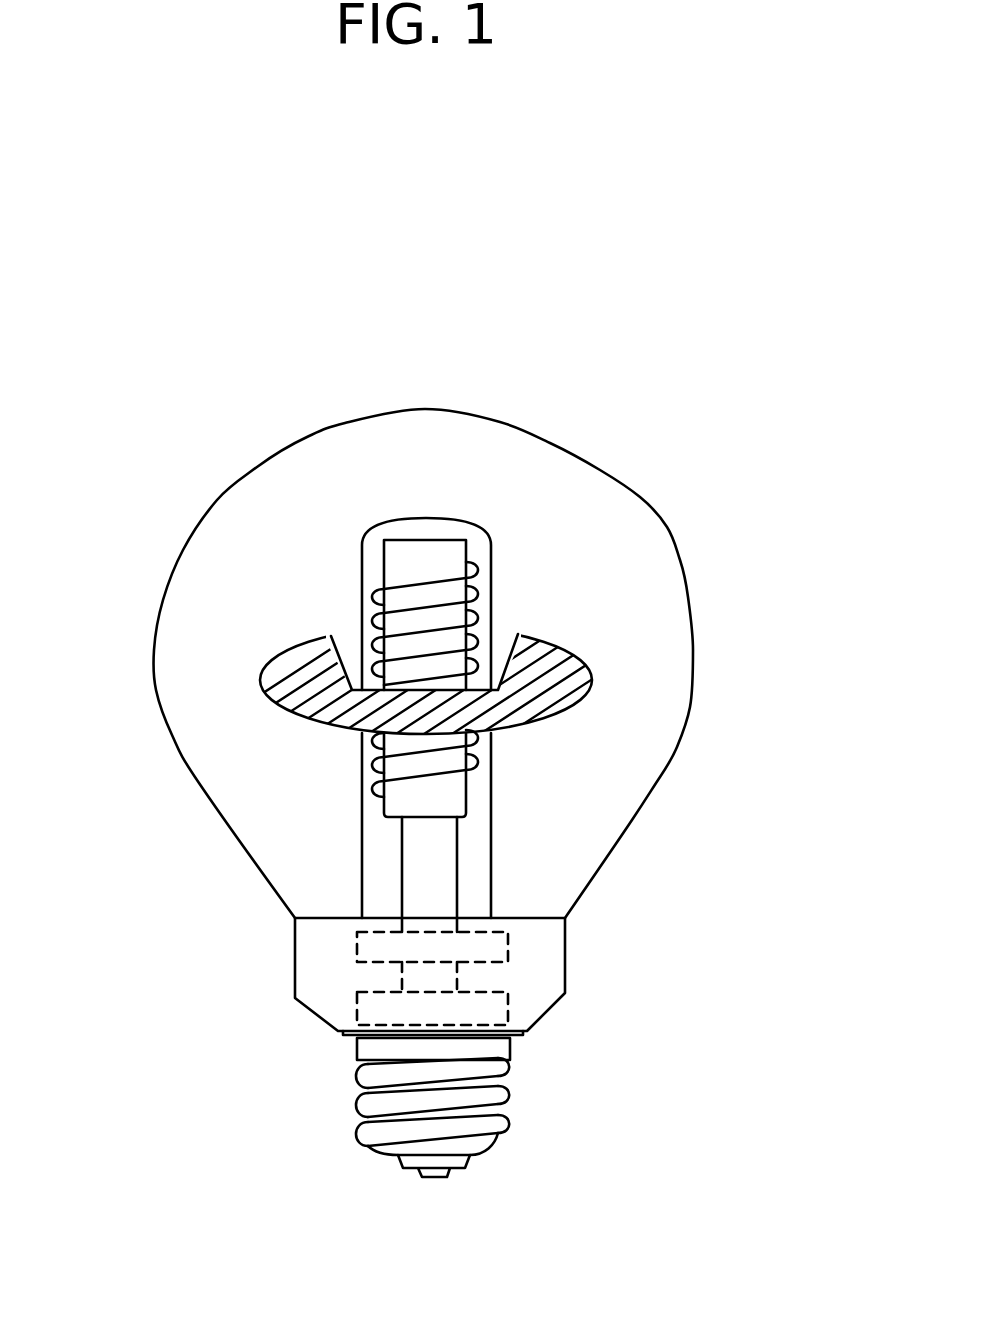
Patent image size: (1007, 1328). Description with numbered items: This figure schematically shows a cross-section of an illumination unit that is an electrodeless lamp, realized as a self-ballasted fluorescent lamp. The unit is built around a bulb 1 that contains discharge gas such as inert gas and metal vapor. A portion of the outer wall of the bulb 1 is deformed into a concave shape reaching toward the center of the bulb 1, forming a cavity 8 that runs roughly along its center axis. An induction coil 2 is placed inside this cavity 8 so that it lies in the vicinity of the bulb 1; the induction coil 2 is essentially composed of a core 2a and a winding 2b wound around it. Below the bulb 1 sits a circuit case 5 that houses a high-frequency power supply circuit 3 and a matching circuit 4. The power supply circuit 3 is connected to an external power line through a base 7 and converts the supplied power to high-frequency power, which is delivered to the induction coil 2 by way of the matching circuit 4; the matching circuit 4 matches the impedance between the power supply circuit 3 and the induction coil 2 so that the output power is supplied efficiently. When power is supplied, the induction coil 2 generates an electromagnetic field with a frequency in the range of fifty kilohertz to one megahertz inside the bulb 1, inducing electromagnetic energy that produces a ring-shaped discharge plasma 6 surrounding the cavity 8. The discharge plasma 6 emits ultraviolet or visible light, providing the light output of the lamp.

The bulb 1 is at (313, 433).
The induction coil 2 is at (596, 563).
The core 2a is at (452, 798).
The winding 2b is at (480, 592).
The high-frequency power supply circuit 3 is at (353, 1007).
The matching circuit 4 is at (353, 943).
The circuit case 5 is at (565, 950).
The ring-shaped discharge plasma 6 is at (588, 677).
The base 7 is at (512, 1098).
The cavity 8 is at (358, 569).